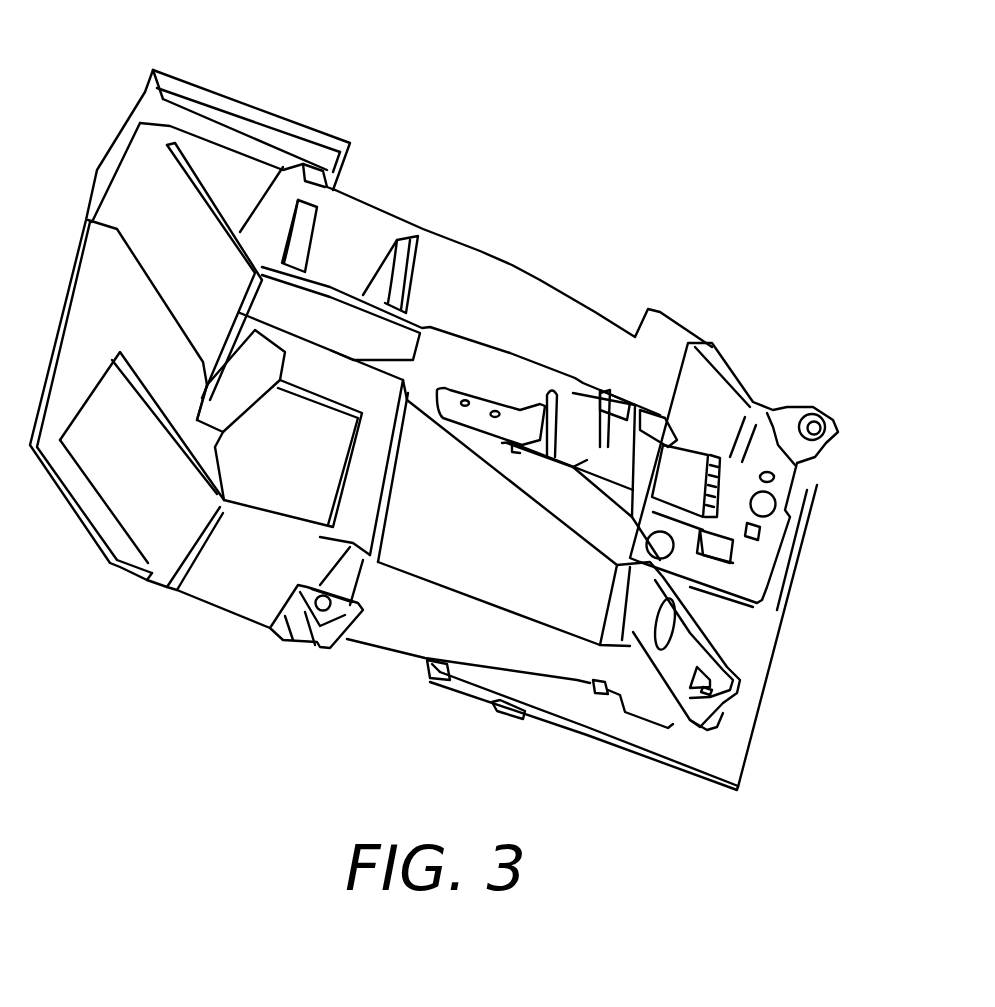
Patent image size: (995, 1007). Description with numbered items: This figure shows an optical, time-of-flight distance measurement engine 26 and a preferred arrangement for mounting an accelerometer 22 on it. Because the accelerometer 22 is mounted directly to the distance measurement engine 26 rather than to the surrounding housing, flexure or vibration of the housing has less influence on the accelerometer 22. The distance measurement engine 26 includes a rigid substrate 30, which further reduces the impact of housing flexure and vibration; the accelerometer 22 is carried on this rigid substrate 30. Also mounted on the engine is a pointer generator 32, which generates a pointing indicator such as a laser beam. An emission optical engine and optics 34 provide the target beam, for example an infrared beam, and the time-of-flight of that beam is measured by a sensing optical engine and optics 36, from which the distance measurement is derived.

The time-of-flight distance measurement engine 26 is at (351, 399).
The sensing optical engine and optics 36 is at (510, 284).
The pointer generator 32 is at (477, 413).
The emission optical engine and optics 34 is at (437, 532).
The rigid substrate 30 is at (722, 548).
The accelerometer 22 is at (766, 568).